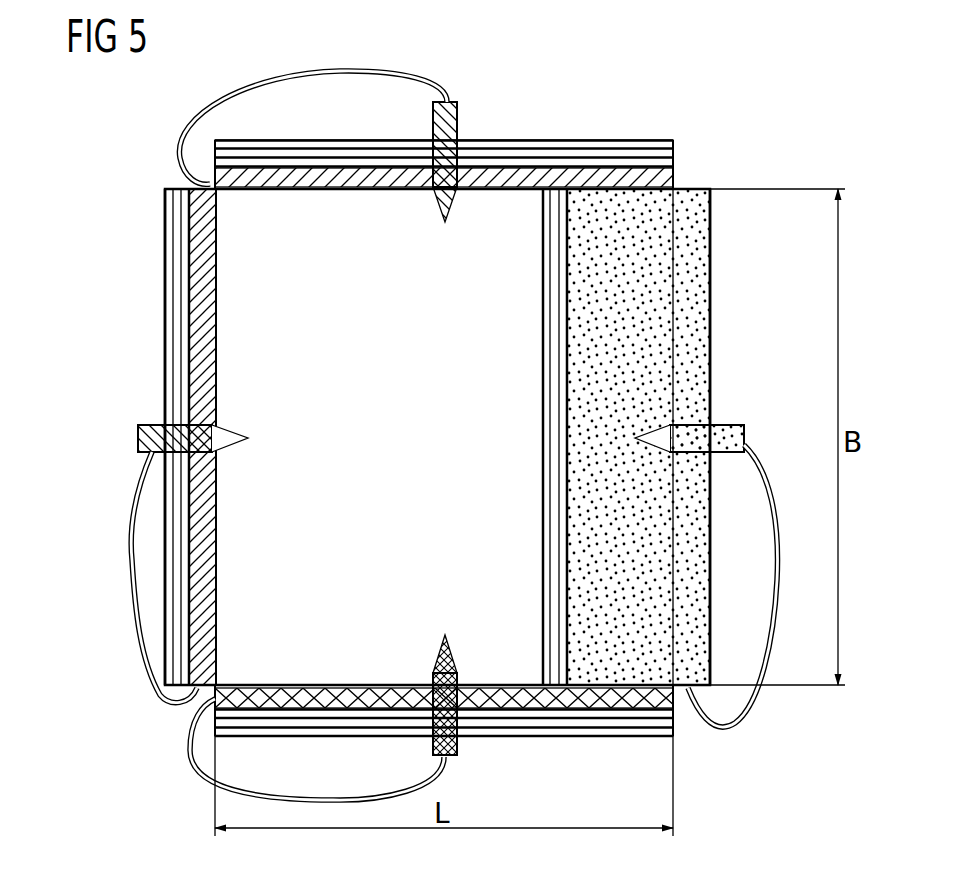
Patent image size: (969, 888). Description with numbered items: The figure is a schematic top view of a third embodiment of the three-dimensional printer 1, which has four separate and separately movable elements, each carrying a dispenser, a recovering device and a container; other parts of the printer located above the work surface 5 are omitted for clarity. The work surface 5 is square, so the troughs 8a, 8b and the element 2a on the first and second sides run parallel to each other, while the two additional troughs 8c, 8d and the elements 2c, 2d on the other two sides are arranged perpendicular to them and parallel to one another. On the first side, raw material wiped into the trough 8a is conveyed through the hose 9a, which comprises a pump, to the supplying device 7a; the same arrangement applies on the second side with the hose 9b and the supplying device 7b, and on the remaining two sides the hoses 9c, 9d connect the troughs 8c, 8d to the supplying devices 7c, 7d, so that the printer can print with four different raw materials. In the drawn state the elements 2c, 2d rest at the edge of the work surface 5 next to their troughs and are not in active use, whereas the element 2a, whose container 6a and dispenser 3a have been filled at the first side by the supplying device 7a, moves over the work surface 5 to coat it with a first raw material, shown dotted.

The 3D printer 1 is at (122, 212).
The element 2a is at (666, 393).
The element 2c is at (444, 756).
The element 2d is at (378, 370).
The dispenser 3a is at (559, 190).
The work surface 5 is at (292, 203).
The container 6a is at (555, 437).
The supplying device 7a is at (733, 418).
The supplying device 7b is at (148, 422).
The supplying device 7c is at (462, 743).
The supplying device 7d is at (432, 120).
The trough 8a is at (698, 283).
The trough 8b is at (197, 305).
The trough 8c is at (620, 698).
The trough 8d is at (210, 185).
The hose 9a is at (780, 600).
The hose 9b is at (132, 545).
The hose 9c is at (190, 757).
The hose 9d is at (300, 70).